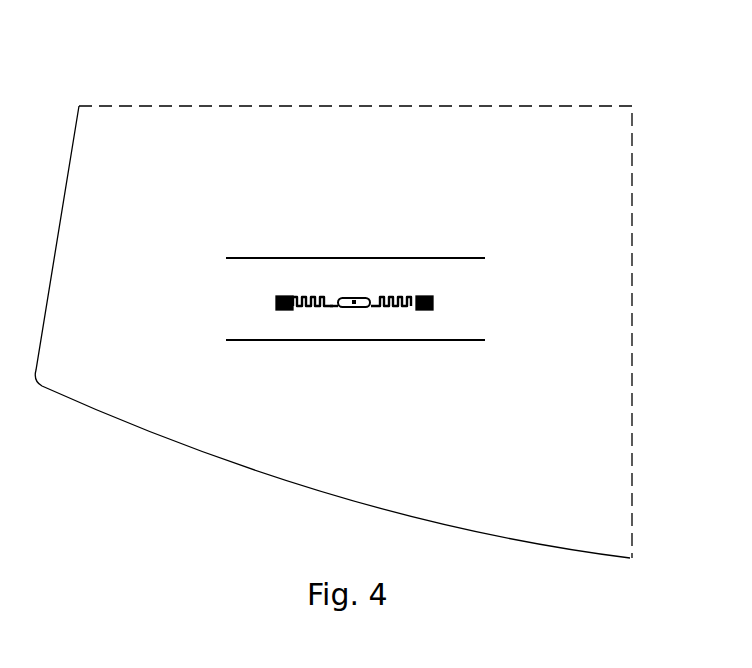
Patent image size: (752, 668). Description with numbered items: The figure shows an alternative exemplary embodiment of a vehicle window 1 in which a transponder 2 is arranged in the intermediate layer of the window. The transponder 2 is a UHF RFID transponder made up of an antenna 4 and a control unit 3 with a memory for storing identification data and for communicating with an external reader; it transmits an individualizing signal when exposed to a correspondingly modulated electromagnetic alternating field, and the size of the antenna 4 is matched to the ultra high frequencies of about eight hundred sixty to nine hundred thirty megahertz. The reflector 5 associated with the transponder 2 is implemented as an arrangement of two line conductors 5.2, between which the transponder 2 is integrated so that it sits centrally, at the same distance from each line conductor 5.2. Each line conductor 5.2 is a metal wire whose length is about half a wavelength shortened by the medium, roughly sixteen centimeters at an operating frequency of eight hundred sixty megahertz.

The vehicle window 1 is at (520, 71).
The transponder 2 is at (322, 169).
The control unit 3 is at (350, 289).
The antenna 4 is at (299, 290).
The reflector 5 is at (266, 373).
The line conductor 5.2 is at (242, 263).